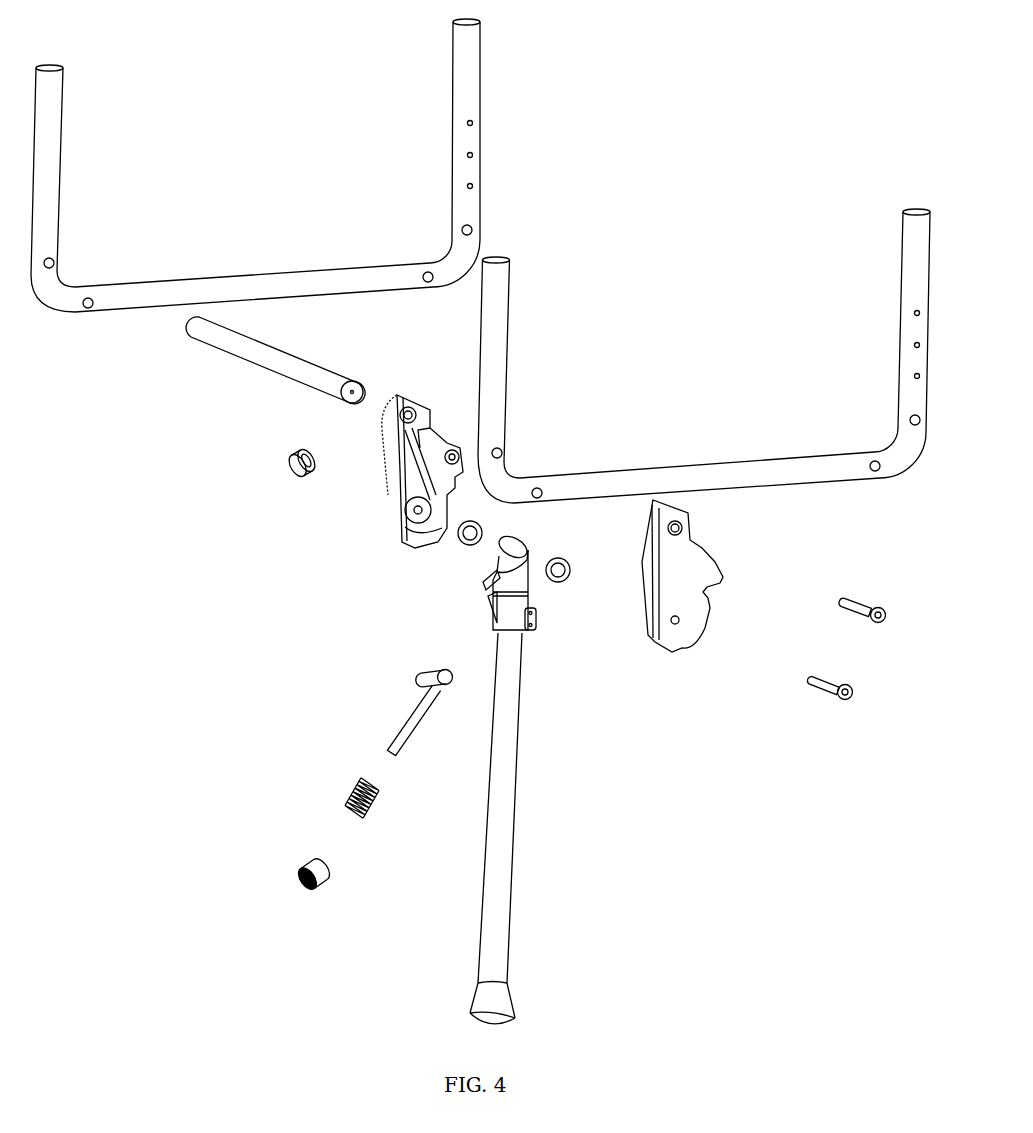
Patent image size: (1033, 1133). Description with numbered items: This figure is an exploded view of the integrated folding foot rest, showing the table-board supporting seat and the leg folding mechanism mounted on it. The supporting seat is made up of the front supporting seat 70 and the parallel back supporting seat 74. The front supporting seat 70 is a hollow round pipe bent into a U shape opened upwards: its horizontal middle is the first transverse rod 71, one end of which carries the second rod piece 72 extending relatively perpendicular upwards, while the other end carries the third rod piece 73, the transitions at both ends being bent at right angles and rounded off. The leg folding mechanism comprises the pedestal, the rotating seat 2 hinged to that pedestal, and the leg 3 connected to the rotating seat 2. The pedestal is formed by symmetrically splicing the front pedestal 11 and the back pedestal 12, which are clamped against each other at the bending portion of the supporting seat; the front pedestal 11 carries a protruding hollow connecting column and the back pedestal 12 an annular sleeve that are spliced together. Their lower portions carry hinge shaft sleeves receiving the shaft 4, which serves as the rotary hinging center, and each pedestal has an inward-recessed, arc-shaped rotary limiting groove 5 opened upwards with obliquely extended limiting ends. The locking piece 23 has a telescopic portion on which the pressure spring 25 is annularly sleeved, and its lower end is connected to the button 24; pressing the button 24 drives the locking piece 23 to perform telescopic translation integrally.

The front supporting seat 70 is at (712, 366).
The first transverse rod 71 is at (613, 483).
The second rod piece 72 is at (495, 335).
The third rod piece 73 is at (910, 288).
The back supporting seat 74 is at (155, 298).
The front pedestal 11 is at (379, 500).
The rotary limiting groove 5 is at (410, 537).
The rotating seat 2 is at (497, 548).
The leg 3 is at (498, 865).
The back pedestal 12 is at (687, 632).
The shaft 4 is at (822, 690).
The locking piece 23 is at (410, 713).
The pressure spring 25 is at (350, 797).
The button 24 is at (300, 872).